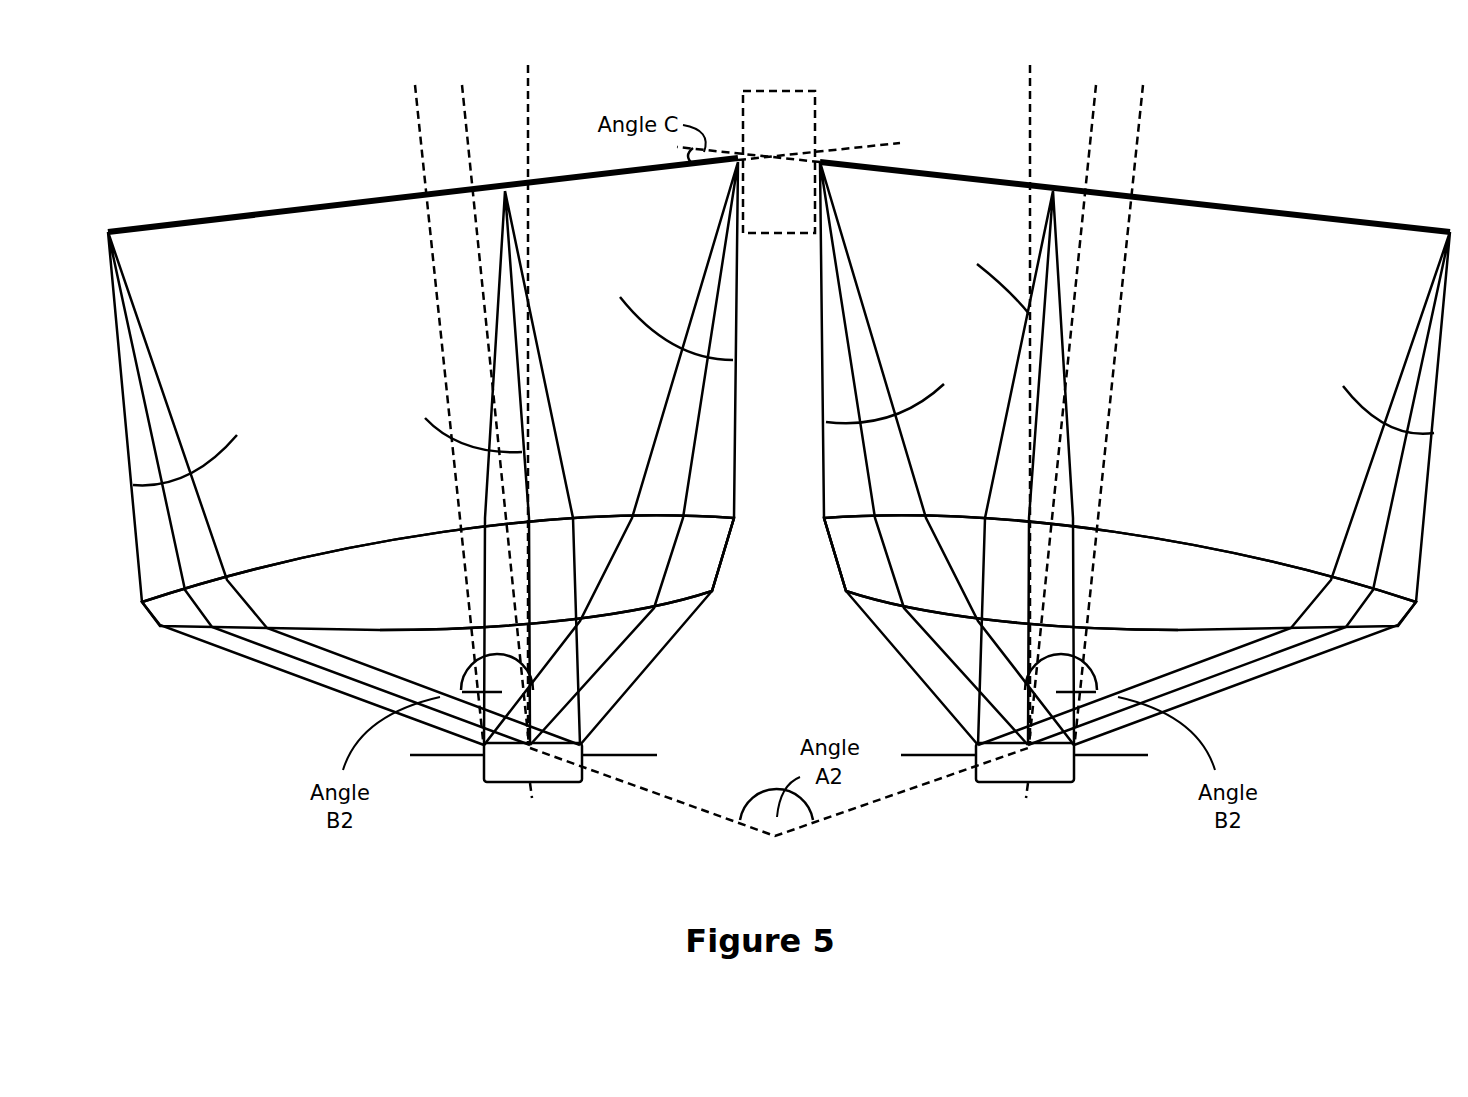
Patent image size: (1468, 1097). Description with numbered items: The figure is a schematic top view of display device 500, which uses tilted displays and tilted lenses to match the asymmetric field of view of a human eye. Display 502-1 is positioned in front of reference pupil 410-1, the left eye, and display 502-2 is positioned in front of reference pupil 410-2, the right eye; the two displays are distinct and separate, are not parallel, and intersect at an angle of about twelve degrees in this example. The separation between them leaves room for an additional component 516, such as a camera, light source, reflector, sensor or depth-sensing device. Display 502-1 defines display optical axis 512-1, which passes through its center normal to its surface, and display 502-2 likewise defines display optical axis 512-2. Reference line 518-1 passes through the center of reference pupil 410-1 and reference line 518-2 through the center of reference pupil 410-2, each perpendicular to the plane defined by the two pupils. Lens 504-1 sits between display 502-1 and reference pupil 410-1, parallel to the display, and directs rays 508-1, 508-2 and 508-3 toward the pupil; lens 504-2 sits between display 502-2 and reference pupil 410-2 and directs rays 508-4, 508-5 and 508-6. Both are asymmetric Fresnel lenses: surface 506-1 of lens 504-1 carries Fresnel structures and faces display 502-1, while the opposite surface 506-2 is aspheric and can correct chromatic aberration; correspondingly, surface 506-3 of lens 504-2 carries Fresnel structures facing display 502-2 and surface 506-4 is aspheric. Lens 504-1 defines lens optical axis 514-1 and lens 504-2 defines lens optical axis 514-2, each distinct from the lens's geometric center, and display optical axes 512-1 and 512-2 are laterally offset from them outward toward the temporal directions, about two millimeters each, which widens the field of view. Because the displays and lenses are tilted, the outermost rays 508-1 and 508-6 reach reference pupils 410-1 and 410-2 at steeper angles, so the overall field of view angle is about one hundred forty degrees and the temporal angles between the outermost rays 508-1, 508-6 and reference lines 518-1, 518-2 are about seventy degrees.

The display device 500 is at (190, 106).
The display 502-1 is at (243, 215).
The display 502-2 is at (1315, 216).
The lens 504-1 is at (428, 592).
The lens 504-2 is at (1171, 594).
The surface 506-1 is at (383, 538).
The surface 506-2 is at (682, 601).
The surface 506-3 is at (1206, 543).
The surface 506-4 is at (878, 603).
The ray 508-1 is at (181, 437).
The ray 508-2 is at (492, 393).
The ray 508-3 is at (699, 292).
The ray 508-4 is at (882, 368).
The ray 508-5 is at (1048, 277).
The ray 508-6 is at (1399, 380).
The display optical axis 512-1 is at (418, 130).
The display optical axis 512-2 is at (1142, 130).
The lens optical axis 514-1 is at (465, 105).
The lens optical axis 514-2 is at (1095, 105).
The additional component 516 is at (797, 134).
The reference line 518-1 is at (533, 105).
The reference line 518-2 is at (1029, 140).
The reference pupil 410-1 is at (533, 793).
The reference pupil 410-2 is at (1025, 793).